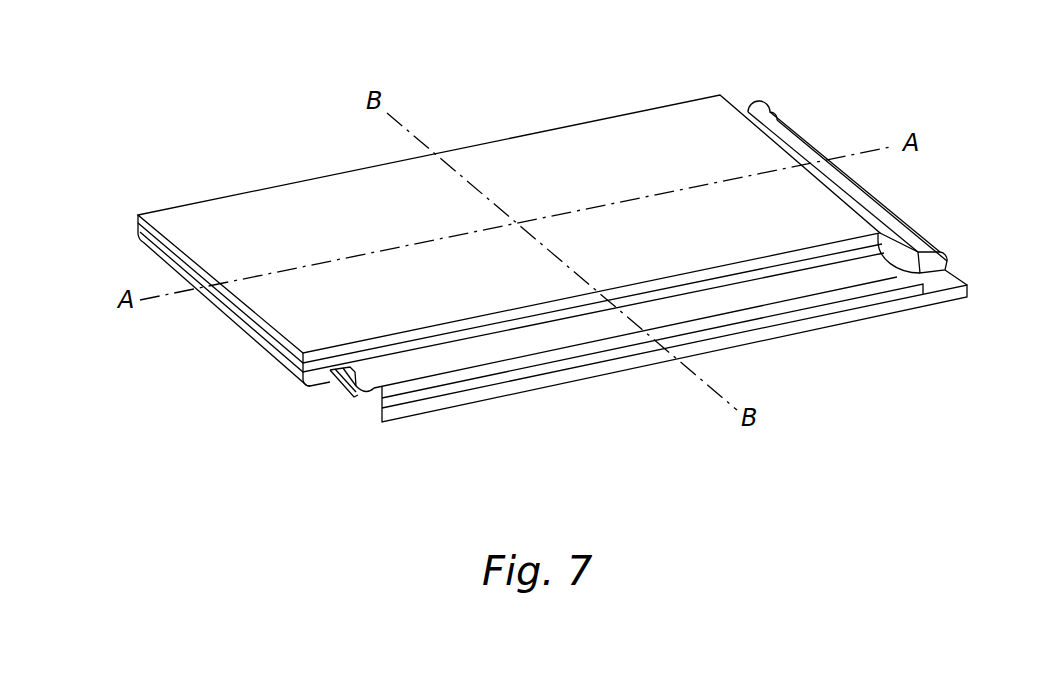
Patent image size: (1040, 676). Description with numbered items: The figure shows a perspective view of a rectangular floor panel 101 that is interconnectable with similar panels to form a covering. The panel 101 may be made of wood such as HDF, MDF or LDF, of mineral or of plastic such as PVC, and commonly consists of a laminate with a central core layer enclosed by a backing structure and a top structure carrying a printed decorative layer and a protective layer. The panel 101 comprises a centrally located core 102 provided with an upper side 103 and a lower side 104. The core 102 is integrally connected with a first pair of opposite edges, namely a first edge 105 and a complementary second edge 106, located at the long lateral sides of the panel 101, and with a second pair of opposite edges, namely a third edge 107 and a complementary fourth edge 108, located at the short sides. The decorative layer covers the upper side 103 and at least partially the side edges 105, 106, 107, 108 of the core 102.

The floor panel 101 is at (125, 162).
The core 102 is at (637, 152).
The upper side 103 is at (317, 212).
The lower side 104 is at (838, 335).
The first edge 105 is at (523, 135).
The second edge 106 is at (520, 387).
The third edge 107 is at (893, 207).
The fourth edge 108 is at (260, 330).